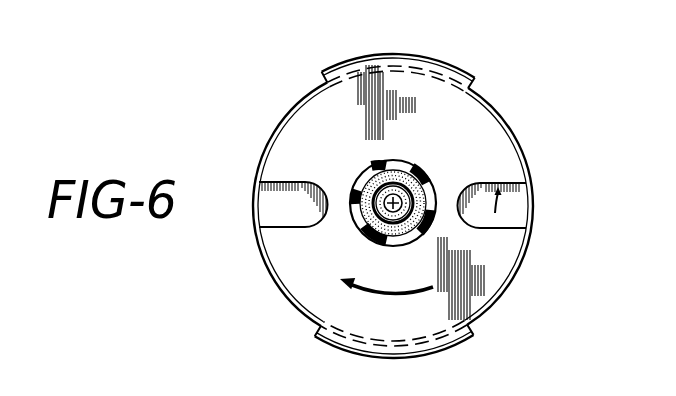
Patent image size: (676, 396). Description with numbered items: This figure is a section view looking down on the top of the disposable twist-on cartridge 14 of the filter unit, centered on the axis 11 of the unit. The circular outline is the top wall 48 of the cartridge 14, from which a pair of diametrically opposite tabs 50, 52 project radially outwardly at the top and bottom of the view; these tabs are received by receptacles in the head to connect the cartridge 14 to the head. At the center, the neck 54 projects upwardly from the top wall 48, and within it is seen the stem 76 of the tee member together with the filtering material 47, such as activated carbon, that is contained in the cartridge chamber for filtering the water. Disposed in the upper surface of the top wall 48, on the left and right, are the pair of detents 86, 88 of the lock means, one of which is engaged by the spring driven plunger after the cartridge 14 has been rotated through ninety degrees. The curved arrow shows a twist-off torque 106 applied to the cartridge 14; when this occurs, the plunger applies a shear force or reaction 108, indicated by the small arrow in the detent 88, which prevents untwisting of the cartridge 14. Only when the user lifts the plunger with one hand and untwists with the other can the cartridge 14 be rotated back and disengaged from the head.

The cartridge 14 is at (272, 121).
The tab 52 is at (453, 70).
The tab 50 is at (462, 342).
The detent 86 is at (278, 188).
The detent 88 is at (514, 220).
The shear force or reaction 108 is at (498, 207).
The top wall 48 is at (490, 255).
The filtering material or unit 47 is at (362, 175).
The neck 54 is at (425, 173).
The stem 76 is at (358, 237).
The axis 11 is at (410, 185).
The twist-off torque 106 is at (408, 297).